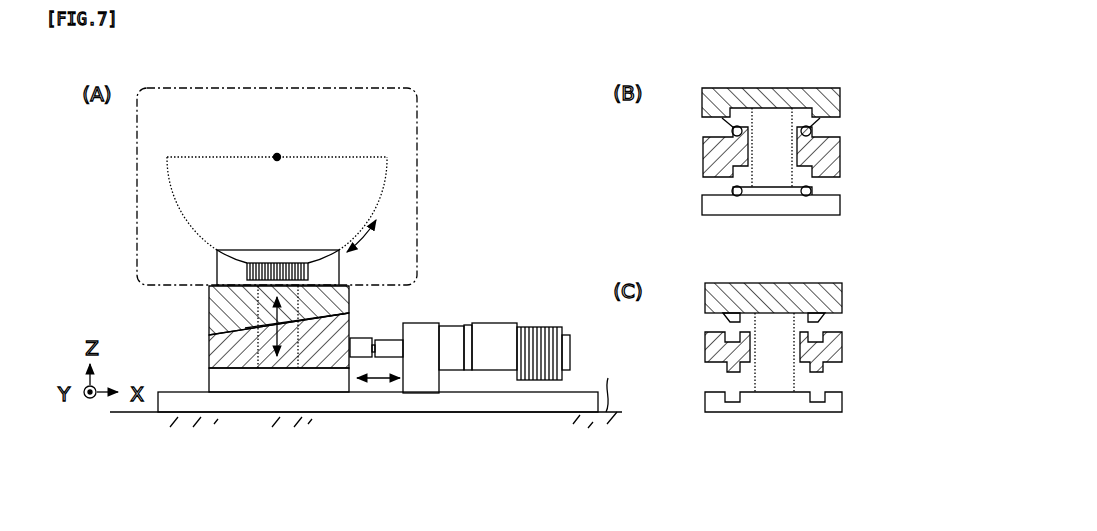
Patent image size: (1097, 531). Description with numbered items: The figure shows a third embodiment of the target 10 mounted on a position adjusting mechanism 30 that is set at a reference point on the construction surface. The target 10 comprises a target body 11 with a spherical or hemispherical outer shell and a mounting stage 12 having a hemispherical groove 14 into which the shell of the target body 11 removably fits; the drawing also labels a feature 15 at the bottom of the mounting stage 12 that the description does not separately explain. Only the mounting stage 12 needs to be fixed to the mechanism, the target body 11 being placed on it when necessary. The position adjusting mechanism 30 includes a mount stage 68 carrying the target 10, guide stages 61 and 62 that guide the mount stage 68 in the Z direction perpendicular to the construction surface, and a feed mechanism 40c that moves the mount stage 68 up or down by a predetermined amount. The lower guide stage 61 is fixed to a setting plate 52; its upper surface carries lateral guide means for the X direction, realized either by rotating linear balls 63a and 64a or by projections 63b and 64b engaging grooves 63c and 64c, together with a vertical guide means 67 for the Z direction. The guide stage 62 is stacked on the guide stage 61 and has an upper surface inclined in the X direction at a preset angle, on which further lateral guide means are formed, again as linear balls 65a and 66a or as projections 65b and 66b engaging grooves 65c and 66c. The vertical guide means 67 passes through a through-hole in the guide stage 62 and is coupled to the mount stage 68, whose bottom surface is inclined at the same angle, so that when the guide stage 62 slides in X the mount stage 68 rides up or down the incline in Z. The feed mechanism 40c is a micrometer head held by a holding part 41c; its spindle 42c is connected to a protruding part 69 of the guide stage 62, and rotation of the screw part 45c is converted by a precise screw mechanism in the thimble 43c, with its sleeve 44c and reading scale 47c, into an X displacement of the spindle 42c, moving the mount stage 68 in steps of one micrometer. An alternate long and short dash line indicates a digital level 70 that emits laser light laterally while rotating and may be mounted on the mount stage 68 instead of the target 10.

The target 10 is at (387, 194).
The target body 11 is at (170, 180).
The mounting stage 12 is at (223, 263).
The hemispherical groove 14 is at (325, 250).
The stage bottom portion 15 is at (260, 263).
The position adjusting mechanism 30 is at (507, 255).
The feed mechanism 40c is at (448, 328).
The holding part 41c is at (430, 323).
The spindle 42c is at (385, 357).
The thimble 43c is at (488, 370).
The sleeve 44c is at (450, 370).
The screw part 45c is at (538, 380).
The reading scale 47c is at (467, 323).
The setting plate 52 is at (160, 403).
The guide stage 61 is at (209, 373).
The guide stage 62 is at (209, 341).
The linear ball 63a is at (733, 197).
The projection 63b is at (728, 368).
The groove 63c is at (725, 396).
The linear ball 64a is at (810, 197).
The projection 64b is at (820, 370).
The groove 64c is at (807, 395).
The linear ball 65a is at (721, 116).
The projection 65b is at (728, 312).
The groove 65c is at (712, 338).
The linear ball 66a is at (813, 116).
The projection 66b is at (811, 312).
The groove 66c is at (822, 338).
The vertical guide means 67 is at (252, 365).
The mount stage 68 is at (209, 303).
The protruding part 69 is at (357, 347).
The digital level 70 is at (417, 130).